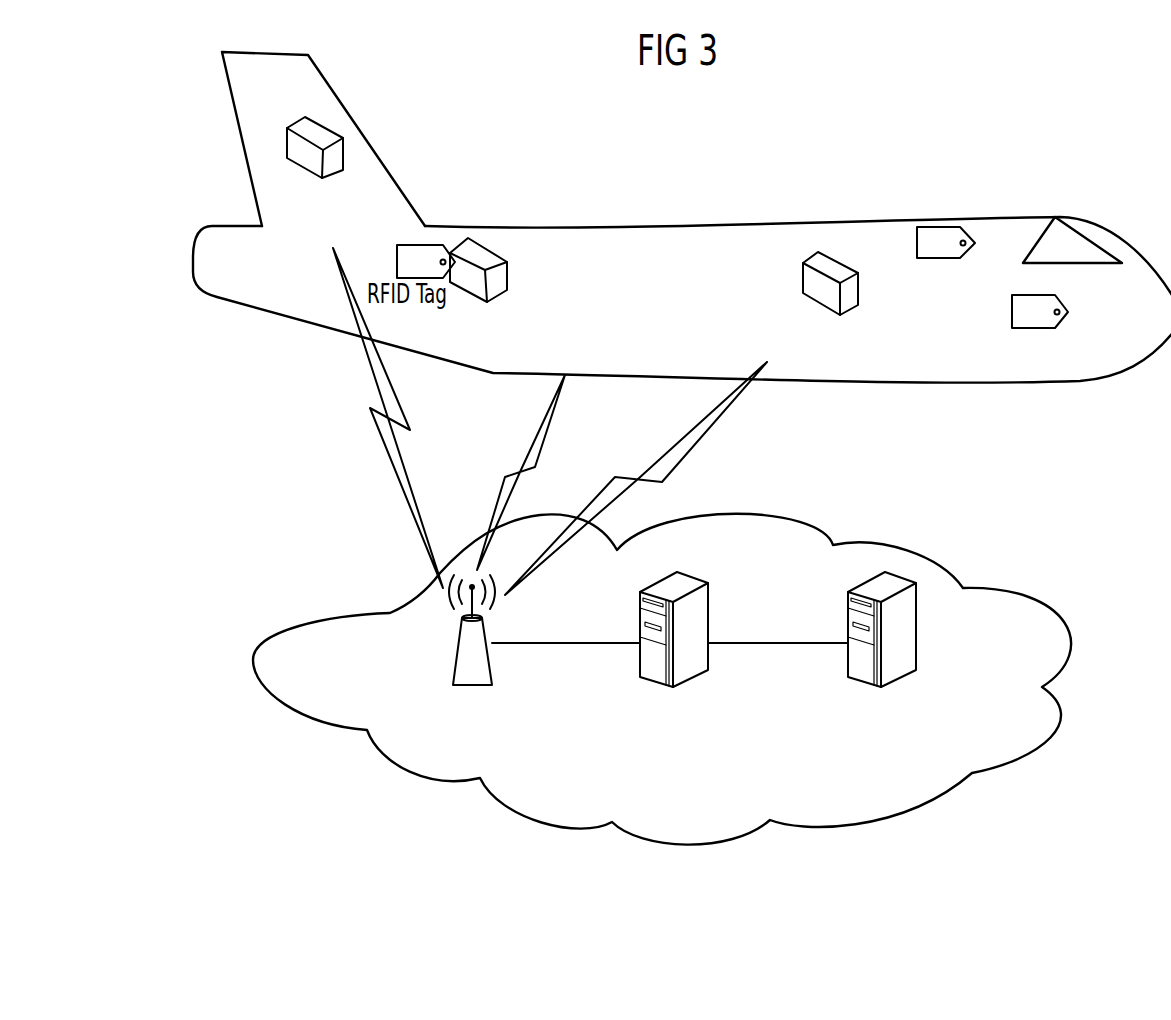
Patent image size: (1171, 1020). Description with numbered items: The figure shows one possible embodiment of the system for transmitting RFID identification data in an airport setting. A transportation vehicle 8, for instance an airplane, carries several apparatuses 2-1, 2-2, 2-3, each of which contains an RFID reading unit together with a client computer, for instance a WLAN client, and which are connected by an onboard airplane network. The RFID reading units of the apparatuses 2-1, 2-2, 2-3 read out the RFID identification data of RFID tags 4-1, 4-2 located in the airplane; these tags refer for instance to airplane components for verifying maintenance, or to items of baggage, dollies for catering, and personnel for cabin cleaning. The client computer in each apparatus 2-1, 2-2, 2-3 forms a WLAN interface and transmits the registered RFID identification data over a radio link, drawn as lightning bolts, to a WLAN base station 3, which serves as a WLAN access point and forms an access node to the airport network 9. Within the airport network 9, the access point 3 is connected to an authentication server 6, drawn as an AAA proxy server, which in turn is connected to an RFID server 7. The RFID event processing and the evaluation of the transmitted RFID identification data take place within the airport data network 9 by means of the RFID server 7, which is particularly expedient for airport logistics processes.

The apparatus 2-1 is at (818, 252).
The apparatus 2-2 is at (485, 247).
The apparatus 2-3 is at (287, 145).
The WLAN base station 3 is at (455, 653).
The RFID tag 4-1 is at (943, 228).
The RFID tag 4-2 is at (1012, 310).
The authentication server 6 is at (708, 610).
The RFID server 7 is at (915, 643).
The transportation vehicle 8 is at (646, 242).
The airport network 9 is at (1070, 648).